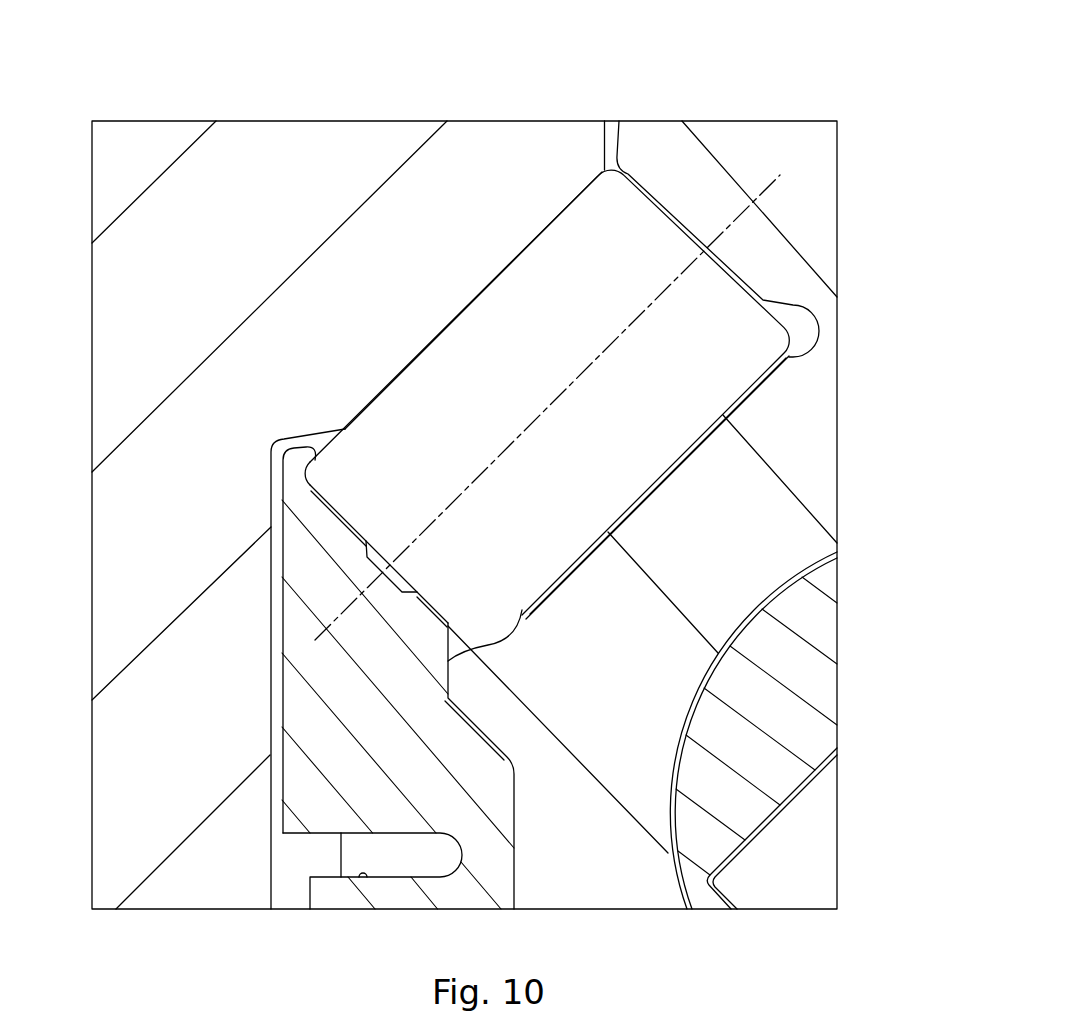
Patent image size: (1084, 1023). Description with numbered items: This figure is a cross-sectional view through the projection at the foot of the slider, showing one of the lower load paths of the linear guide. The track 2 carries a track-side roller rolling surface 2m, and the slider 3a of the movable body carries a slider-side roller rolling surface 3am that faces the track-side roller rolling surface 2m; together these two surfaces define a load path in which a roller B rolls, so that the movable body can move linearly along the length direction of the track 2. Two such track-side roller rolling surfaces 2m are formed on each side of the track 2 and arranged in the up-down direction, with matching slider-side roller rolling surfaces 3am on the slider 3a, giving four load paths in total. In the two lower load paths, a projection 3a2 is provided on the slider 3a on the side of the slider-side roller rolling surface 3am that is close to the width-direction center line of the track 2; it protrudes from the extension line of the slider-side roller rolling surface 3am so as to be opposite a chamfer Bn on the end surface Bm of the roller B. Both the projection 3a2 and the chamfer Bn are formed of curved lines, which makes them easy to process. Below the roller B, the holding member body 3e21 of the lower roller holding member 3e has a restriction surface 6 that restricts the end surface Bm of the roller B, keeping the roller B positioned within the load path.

The track 2 is at (348, 296).
The track-side roller rolling surface 2m is at (466, 297).
The slider 3a is at (642, 487).
The slider-side roller rolling surface 3am is at (677, 464).
The projection 3a2 is at (482, 766).
The roller holding member 3e is at (753, 730).
The holding member body 3e21 is at (398, 704).
The restriction surface 6 is at (337, 513).
The roller B is at (547, 405).
The end surface Bm is at (413, 589).
The chamfer Bn is at (485, 626).